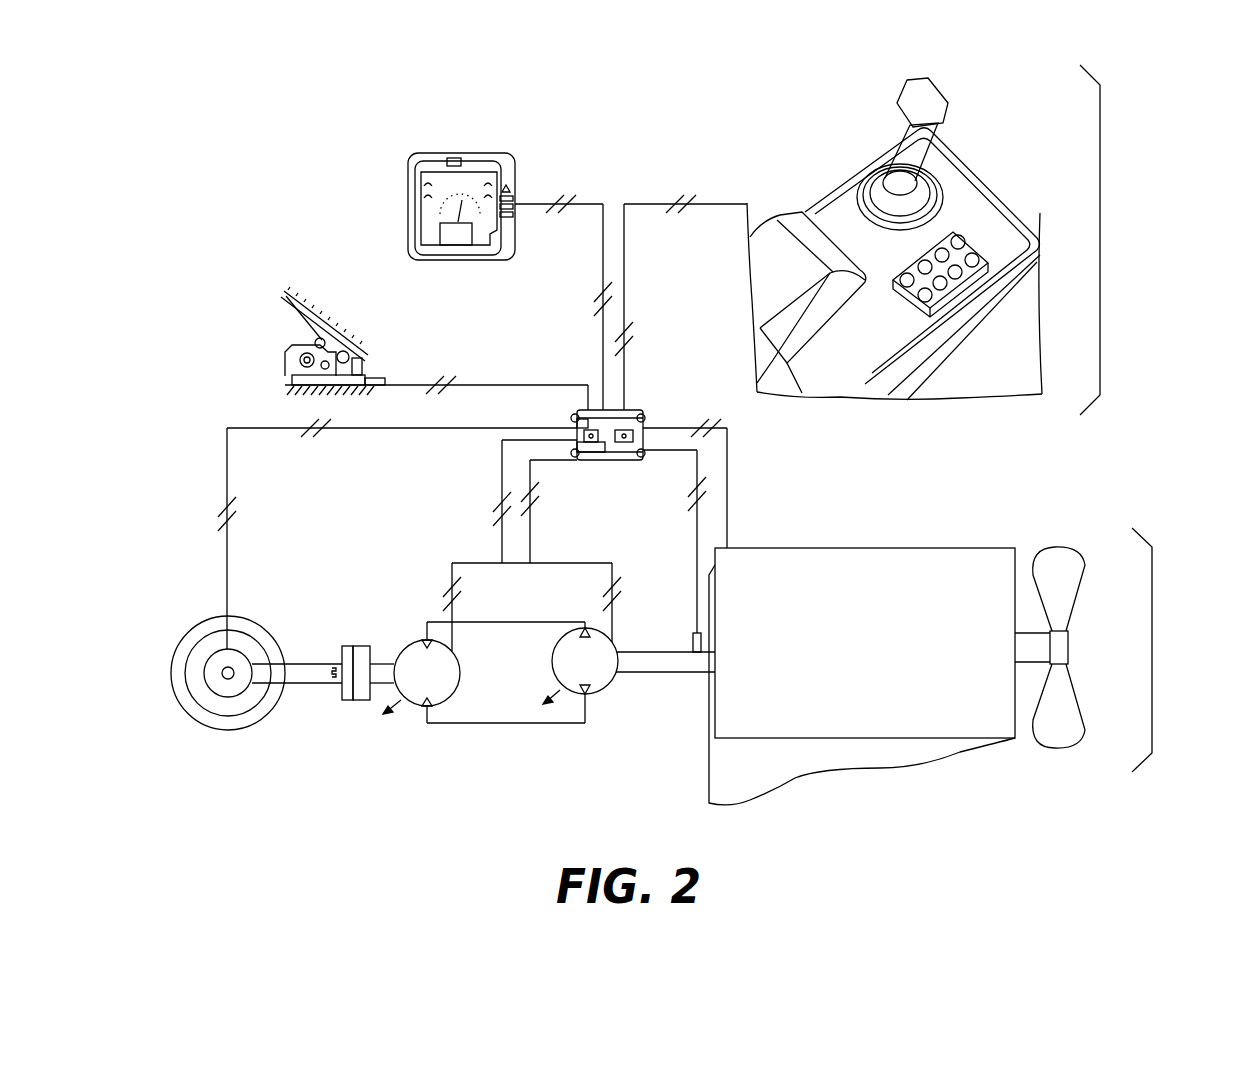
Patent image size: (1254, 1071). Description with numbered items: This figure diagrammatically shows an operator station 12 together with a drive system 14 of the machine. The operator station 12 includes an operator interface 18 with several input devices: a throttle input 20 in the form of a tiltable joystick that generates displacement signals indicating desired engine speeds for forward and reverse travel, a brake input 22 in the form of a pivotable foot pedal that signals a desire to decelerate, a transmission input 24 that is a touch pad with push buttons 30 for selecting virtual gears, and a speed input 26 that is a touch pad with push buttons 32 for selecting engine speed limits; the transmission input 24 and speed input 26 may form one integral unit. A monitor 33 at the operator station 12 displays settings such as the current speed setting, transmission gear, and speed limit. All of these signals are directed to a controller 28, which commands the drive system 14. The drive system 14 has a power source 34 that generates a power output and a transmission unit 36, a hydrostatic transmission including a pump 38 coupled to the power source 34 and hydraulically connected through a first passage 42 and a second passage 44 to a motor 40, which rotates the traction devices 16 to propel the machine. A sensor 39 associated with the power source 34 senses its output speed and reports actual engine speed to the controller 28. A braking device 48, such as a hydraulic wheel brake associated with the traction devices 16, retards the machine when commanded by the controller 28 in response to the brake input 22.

The operator station 12 is at (1102, 281).
The drive system 14 is at (1154, 650).
The traction devices 16 is at (236, 682).
The operator interface 18 is at (941, 225).
The throttle input 20 is at (927, 80).
The brake input 22 is at (336, 326).
The transmission input 24 is at (940, 300).
The speed input 26 is at (977, 278).
The controller 28 is at (638, 412).
The push buttons 30 is at (975, 309).
The push buttons 32 is at (958, 242).
The monitor 33 is at (511, 155).
The power source 34 is at (866, 660).
The transmission unit 36 is at (502, 679).
The pump 38 is at (594, 672).
The sensor 39 is at (694, 634).
The motor 40 is at (432, 683).
The first passage 42 is at (483, 622).
The second passage 44 is at (483, 736).
The braking device 48 is at (240, 648).